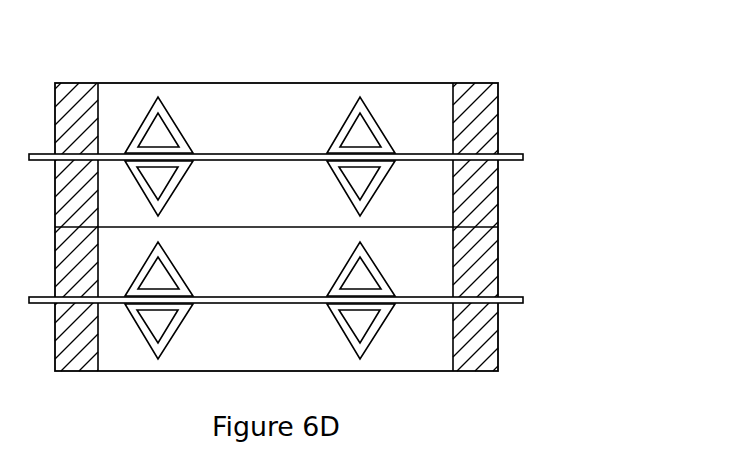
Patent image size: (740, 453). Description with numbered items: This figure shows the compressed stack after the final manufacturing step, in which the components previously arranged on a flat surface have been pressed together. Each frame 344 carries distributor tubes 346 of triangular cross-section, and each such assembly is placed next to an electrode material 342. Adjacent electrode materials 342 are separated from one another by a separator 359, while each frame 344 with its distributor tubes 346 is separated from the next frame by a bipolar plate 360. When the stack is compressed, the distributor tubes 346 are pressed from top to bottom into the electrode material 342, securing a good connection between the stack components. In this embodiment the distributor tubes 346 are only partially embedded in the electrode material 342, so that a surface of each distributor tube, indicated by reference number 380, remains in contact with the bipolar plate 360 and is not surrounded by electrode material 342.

The electrode material 342 is at (270, 102).
The frame 344 is at (486, 103).
The distributor tube 346 is at (380, 136).
The separator 359 is at (380, 225).
The bipolar plate 360 is at (523, 157).
The surface of the distributor tube 380 is at (352, 292).